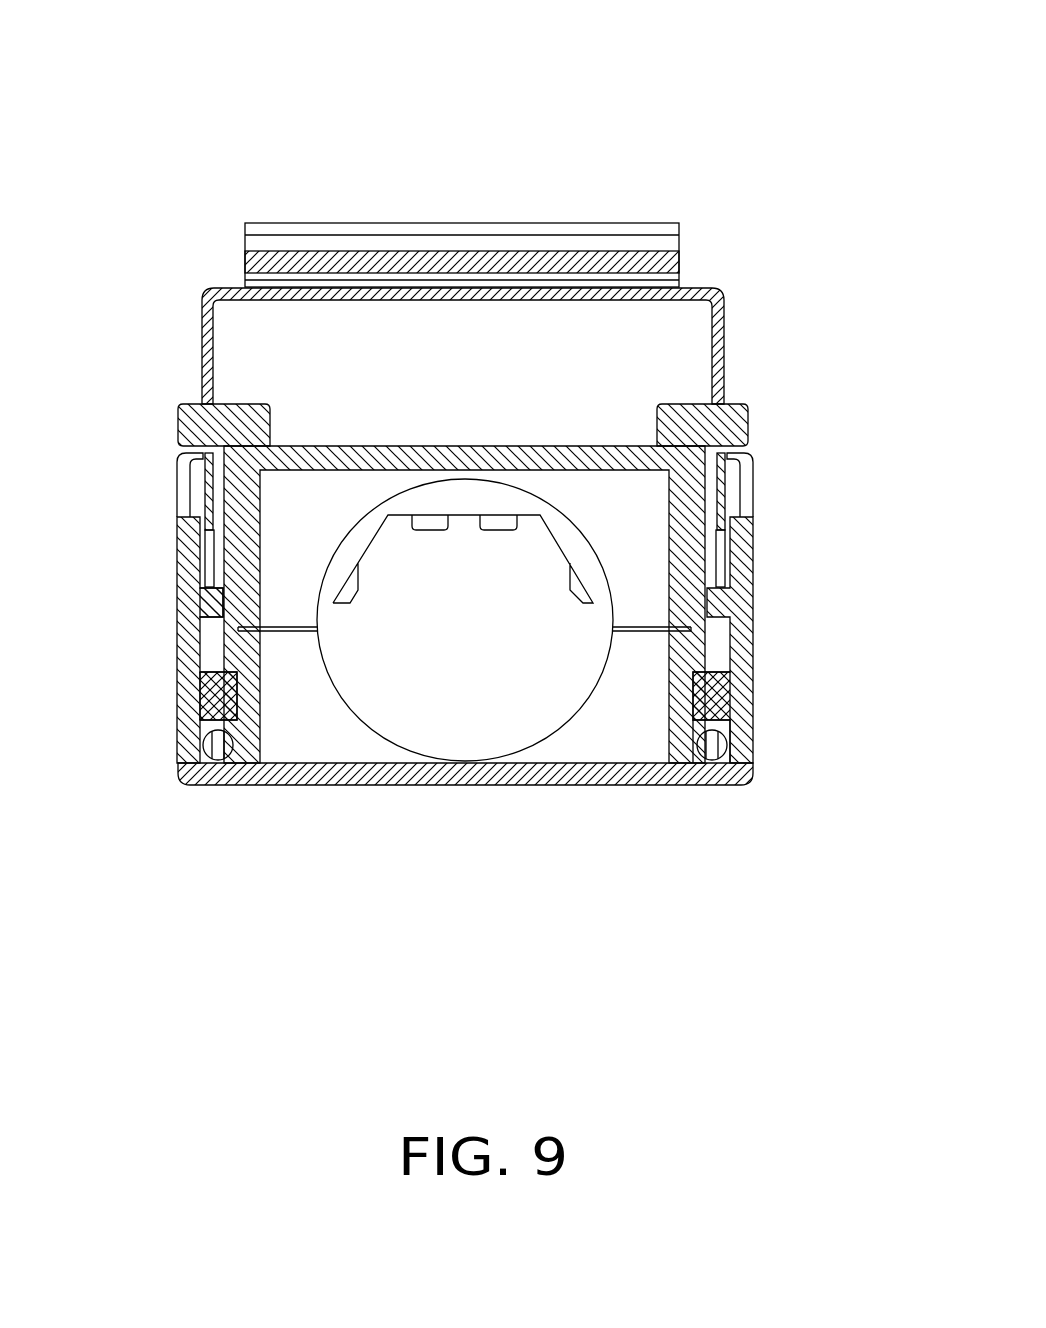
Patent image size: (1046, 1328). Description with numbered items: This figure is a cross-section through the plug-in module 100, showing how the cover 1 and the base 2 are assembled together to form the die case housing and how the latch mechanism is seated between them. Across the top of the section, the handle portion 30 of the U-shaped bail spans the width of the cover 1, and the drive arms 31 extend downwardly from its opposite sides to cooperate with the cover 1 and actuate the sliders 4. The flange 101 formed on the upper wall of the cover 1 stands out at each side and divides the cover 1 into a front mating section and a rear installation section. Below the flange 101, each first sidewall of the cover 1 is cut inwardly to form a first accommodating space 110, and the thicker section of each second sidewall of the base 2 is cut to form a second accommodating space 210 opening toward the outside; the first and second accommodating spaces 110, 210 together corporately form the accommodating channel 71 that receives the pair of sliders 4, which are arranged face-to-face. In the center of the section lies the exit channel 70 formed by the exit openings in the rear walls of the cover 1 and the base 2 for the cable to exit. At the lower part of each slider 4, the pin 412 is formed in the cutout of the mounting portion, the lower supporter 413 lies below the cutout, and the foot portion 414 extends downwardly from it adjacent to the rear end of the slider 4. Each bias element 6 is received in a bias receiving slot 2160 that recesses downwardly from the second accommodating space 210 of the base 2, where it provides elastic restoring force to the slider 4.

The plug-in module 100 is at (461, 62).
The cover 1 is at (416, 445).
The handle portion 30 is at (513, 250).
The exit channel 70 is at (497, 608).
The drive arm 31 is at (728, 330).
The flange 101 is at (210, 437).
The first accommodating space 110 is at (705, 497).
The accommodating channel 71 is at (767, 541).
The pin 412 is at (213, 600).
The slider 4 is at (148, 608).
The second accommodating space 210 is at (739, 592).
The lower supporter 413 is at (215, 707).
The foot portion 414 is at (720, 722).
The bias element 6 is at (210, 740).
The base 2 is at (410, 773).
The bias receiving slot 2160 is at (690, 735).